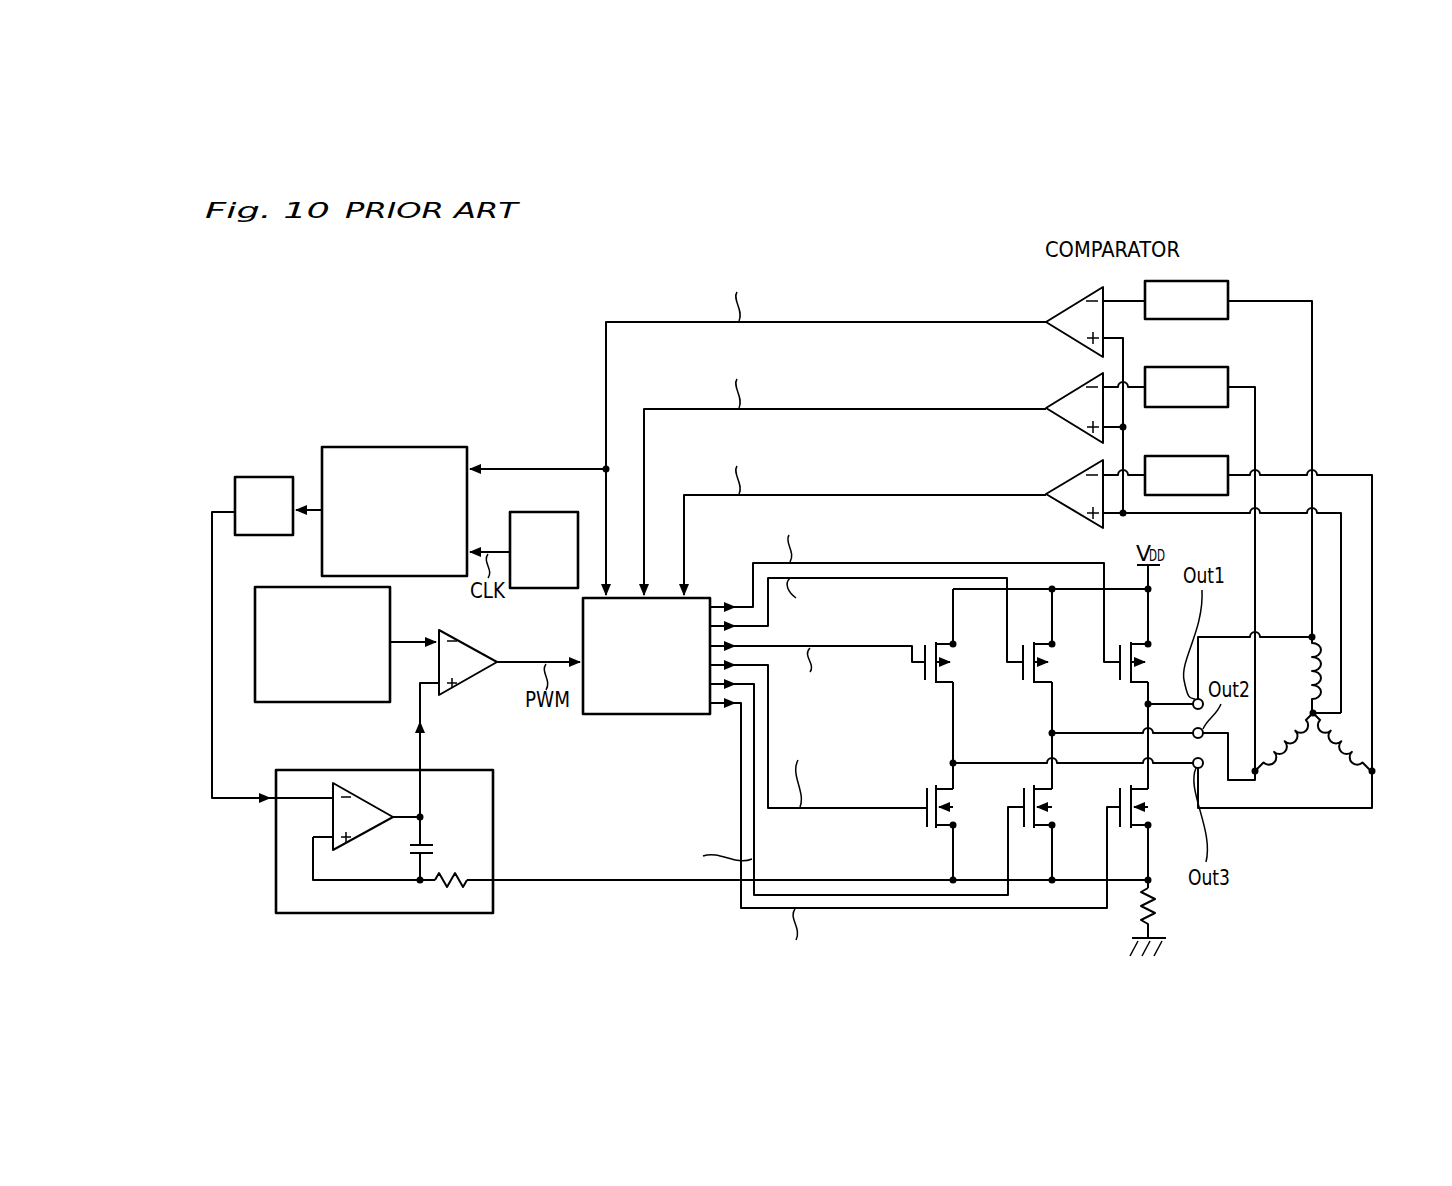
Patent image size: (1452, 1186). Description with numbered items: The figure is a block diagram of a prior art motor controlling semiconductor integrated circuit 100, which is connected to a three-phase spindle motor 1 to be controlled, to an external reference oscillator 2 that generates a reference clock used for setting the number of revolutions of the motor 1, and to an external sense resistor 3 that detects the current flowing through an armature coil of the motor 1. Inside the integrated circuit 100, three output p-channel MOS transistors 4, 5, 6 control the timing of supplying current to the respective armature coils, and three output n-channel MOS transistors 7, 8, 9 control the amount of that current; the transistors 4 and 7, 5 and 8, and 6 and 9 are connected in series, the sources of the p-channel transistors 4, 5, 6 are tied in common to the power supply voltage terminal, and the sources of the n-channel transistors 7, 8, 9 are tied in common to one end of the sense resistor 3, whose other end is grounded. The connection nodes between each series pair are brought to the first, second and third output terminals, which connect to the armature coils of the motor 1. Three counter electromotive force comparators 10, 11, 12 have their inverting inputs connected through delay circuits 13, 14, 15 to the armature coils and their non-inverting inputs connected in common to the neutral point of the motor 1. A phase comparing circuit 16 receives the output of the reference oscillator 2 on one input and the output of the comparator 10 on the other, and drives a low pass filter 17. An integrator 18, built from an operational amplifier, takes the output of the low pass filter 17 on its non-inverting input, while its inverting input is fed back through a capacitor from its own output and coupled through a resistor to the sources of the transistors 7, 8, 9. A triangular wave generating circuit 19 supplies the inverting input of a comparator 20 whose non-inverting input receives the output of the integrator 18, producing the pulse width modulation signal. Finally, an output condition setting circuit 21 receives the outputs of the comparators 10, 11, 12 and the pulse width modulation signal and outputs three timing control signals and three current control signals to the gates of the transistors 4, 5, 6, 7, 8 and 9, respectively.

The motor controlling semiconductor integrated circuit 100 is at (662, 296).
The three-phase motor 1 is at (1290, 762).
The reference oscillator 2 is at (545, 589).
The sense resistor 3 is at (1155, 905).
The output p-channel MOS transistor 4 is at (1152, 666).
The output p-channel MOS transistor 5 is at (1057, 666).
The output p-channel MOS transistor 6 is at (960, 666).
The output n-channel MOS transistor 7 is at (1155, 802).
The output n-channel MOS transistor 8 is at (1058, 802).
The output n-channel MOS transistor 9 is at (960, 802).
The counter electromotive force comparator 10 is at (1068, 300).
The counter electromotive force comparator 11 is at (1068, 386).
The counter electromotive force comparator 12 is at (1068, 475).
The delay circuit 13 is at (1204, 281).
The delay circuit 14 is at (1204, 367).
The delay circuit 15 is at (1204, 456).
The phase comparing circuit 16 is at (390, 446).
The low pass filter 17 is at (264, 476).
The integrator 18 is at (340, 914).
The triangular wave generating circuit 19 is at (276, 586).
The comparator 20 is at (468, 680).
The output condition setting circuit 21 is at (652, 716).